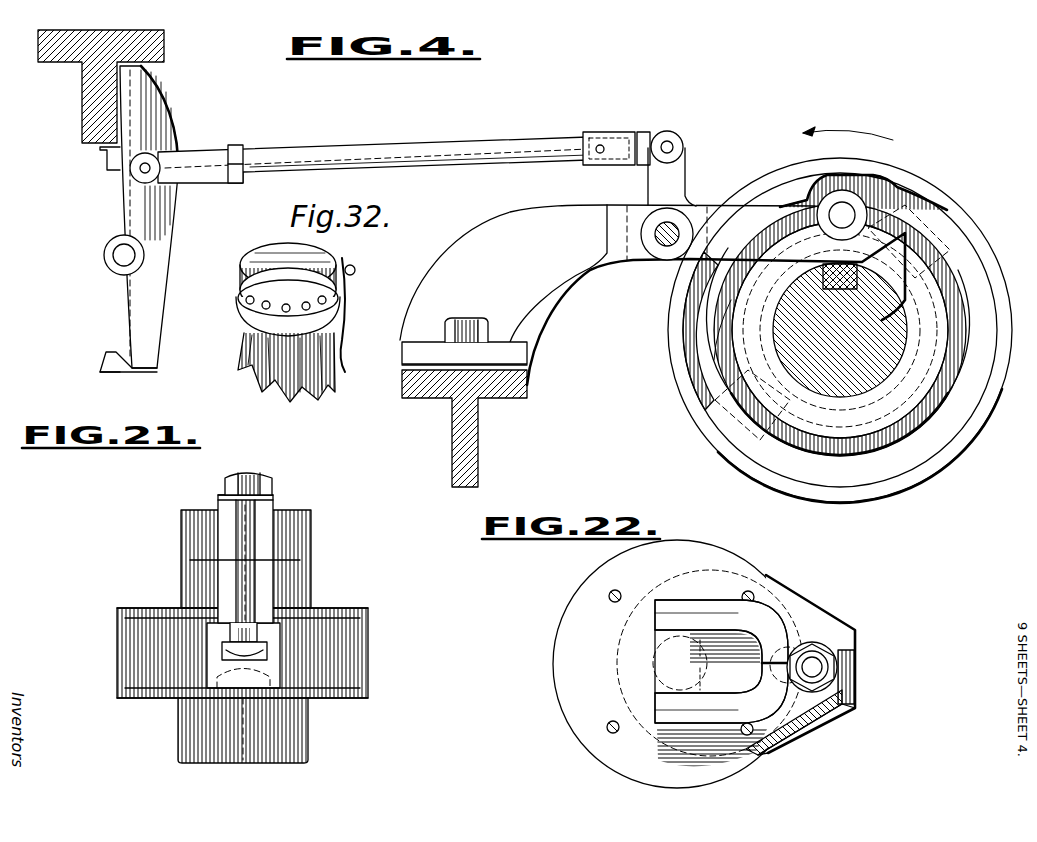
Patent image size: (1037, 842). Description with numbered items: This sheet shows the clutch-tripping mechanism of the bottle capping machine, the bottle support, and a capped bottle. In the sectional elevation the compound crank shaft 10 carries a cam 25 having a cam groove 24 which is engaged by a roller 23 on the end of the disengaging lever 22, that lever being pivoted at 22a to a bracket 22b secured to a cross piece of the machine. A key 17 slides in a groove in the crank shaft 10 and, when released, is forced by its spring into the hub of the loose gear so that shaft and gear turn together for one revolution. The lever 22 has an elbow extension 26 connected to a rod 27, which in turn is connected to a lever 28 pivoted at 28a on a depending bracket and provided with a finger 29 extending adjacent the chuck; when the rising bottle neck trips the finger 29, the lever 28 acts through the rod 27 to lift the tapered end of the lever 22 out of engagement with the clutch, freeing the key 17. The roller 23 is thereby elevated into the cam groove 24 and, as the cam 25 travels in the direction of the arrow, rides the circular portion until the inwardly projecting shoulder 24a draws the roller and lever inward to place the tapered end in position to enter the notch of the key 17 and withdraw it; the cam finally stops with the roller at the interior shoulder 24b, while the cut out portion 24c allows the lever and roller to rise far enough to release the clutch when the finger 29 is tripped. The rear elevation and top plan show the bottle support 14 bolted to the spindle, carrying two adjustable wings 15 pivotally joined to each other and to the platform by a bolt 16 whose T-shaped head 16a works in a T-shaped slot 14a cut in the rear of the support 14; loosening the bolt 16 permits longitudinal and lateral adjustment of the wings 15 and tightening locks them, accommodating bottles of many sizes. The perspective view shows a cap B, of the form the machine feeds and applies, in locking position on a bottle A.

In FIG. 4, the compound crank shaft 10 is at (880, 322).
In FIG. 21, the bottle support 14 is at (166, 623).
In FIG. 22, the bottle support 14 is at (668, 577).
In FIG. 21, the T-shaped slot 14a is at (268, 656).
In FIG. 22, the T-shaped slot 14a is at (858, 660).
In FIG. 21, the adjustable wings 15 is at (198, 530).
In FIG. 22, the adjustable wings 15 is at (718, 606).
In FIG. 21, the bolt 16 is at (246, 472).
In FIG. 22, the bolt 16 is at (818, 660).
In FIG. 21, the T-shaped head 16a is at (258, 640).
In FIG. 4, the key 17 is at (862, 278).
In FIG. 4, the disengaging lever 22 is at (718, 222).
In FIG. 4, the pivot 22a is at (660, 244).
In FIG. 4, the bracket 22b is at (510, 248).
In FIG. 4, the roller 23 is at (845, 215).
In FIG. 4, the cam groove 24 is at (838, 342).
In FIG. 4, the inwardly projecting shoulder 24a is at (715, 322).
In FIG. 4, the interior shoulder 24b is at (868, 228).
In FIG. 4, the cut out portion 24c is at (835, 178).
In FIG. 4, the cam 25 is at (910, 480).
In FIG. 4, the elbow extension 26 is at (660, 176).
In FIG. 4, the rod 27 is at (385, 152).
In FIG. 4, the lever 28 is at (160, 207).
In FIG. 4, the pivot 28a is at (104, 254).
In FIG. 4, the finger 29 is at (106, 356).
In FIG. 32, the bottle A is at (318, 384).
In FIG. 32, the cap B is at (256, 262).